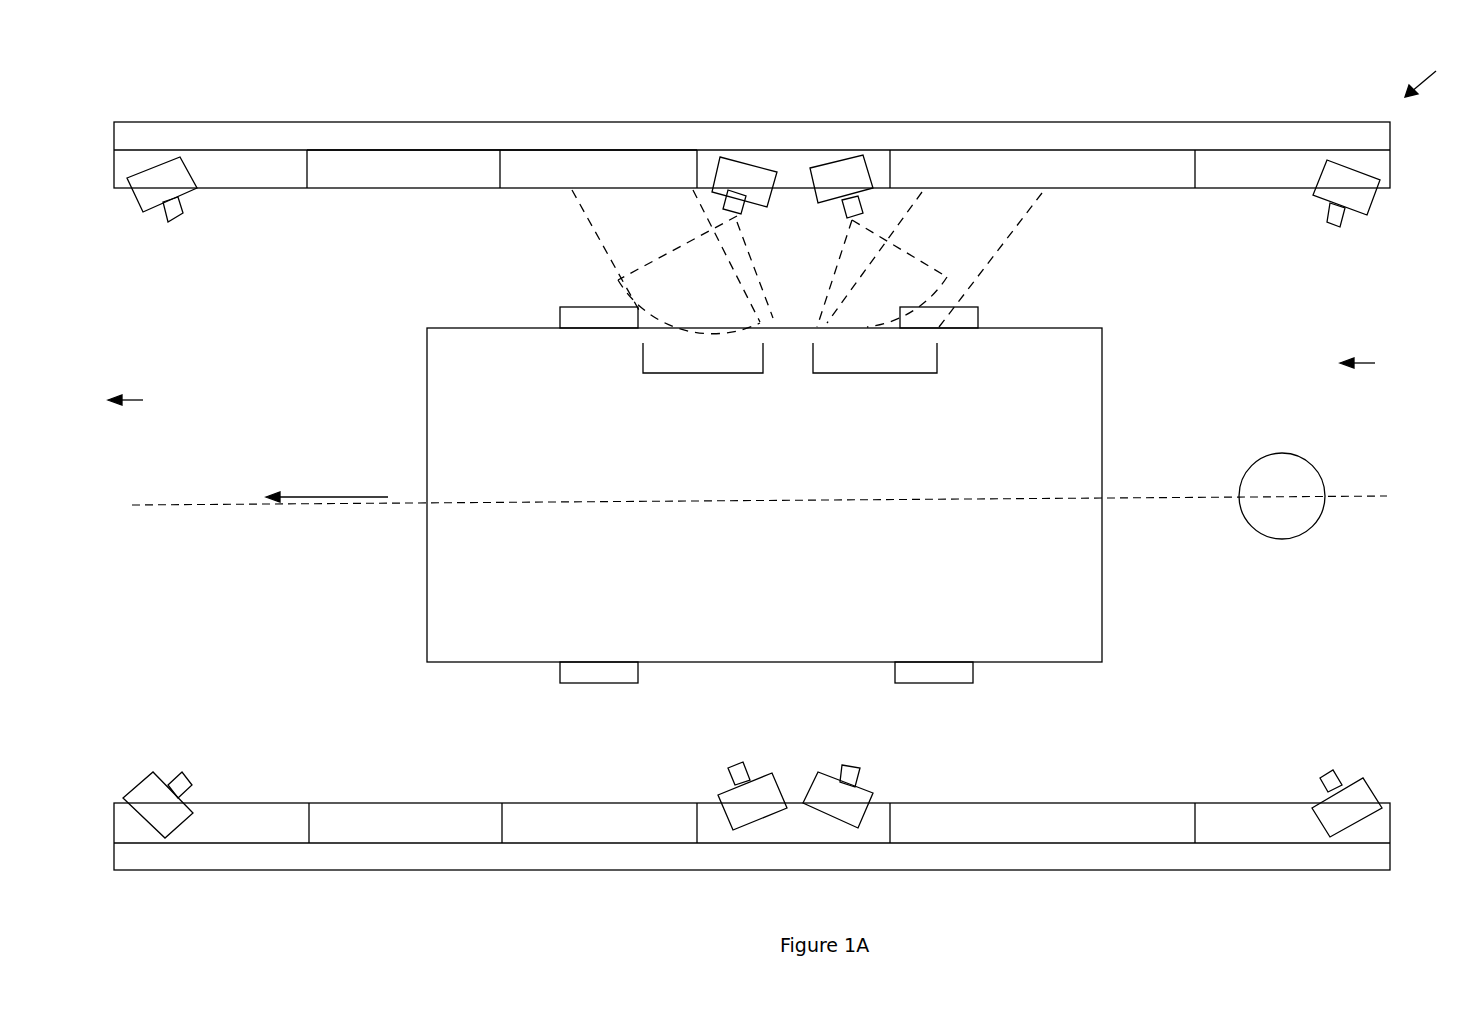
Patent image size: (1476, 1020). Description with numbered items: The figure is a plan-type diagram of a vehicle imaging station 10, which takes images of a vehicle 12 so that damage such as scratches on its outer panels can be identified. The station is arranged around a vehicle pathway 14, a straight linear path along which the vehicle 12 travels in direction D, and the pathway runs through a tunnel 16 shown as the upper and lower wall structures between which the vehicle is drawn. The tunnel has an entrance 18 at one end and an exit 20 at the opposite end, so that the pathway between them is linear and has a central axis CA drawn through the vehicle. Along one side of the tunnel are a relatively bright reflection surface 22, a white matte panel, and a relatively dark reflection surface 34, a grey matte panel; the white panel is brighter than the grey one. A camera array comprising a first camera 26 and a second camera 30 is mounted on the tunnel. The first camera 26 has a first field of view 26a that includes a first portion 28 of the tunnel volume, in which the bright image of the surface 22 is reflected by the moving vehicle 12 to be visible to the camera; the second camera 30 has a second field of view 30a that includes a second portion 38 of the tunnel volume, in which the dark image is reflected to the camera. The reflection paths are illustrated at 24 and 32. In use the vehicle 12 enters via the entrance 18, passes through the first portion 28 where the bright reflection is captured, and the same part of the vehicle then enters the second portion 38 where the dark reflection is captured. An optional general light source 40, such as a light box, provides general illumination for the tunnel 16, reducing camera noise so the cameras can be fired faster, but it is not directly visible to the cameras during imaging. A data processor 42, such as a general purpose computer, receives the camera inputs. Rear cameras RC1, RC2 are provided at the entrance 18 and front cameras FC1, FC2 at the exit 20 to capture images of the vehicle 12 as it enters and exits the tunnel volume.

The vehicle imaging station 10 is at (1437, 74).
The vehicle 12 is at (766, 570).
The vehicle pathway 14 is at (1166, 409).
The tunnel 16 is at (1391, 855).
The entrance 18 is at (1377, 364).
The exit 20 is at (139, 401).
The relatively bright reflection surface 22 is at (1150, 170).
The reflection path 24 is at (980, 213).
The first camera 26 is at (854, 148).
The first field of view 26a is at (872, 242).
The first portion of the tunnel volume 28 is at (875, 378).
The second camera 30 is at (748, 158).
The second field of view 30a is at (742, 251).
The reflection path 32 is at (620, 205).
The relatively dark reflection surface 34 is at (550, 178).
The second portion of the tunnel volume 38 is at (703, 378).
The general light source 40 is at (400, 168).
The data processor 42 is at (1294, 505).
The front camera FC1 is at (193, 190).
The rear camera RC1 is at (1380, 196).
The front camera FC2 is at (143, 783).
The rear camera RC2 is at (1368, 793).
The direction D is at (319, 482).
The central axis CA is at (779, 498).